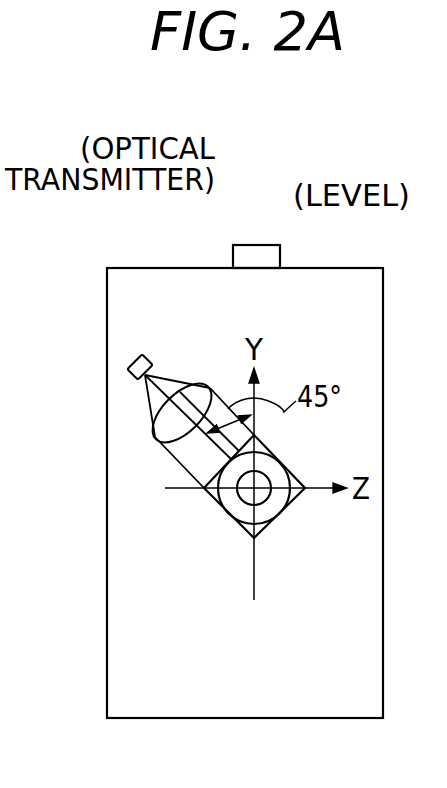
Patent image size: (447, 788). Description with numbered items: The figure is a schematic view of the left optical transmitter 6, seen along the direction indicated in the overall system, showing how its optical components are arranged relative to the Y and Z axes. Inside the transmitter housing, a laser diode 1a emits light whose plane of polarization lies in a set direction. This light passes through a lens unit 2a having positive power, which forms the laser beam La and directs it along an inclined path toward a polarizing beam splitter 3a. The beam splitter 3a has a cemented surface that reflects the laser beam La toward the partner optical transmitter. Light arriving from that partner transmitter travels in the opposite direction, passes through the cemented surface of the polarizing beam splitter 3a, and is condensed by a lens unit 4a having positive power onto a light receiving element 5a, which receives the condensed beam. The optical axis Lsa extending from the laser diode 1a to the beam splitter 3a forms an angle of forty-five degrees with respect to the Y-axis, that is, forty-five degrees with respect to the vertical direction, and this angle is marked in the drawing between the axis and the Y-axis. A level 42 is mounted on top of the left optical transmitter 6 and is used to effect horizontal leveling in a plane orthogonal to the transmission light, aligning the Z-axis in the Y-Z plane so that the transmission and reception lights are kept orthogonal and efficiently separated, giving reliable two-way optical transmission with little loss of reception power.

The laser diode 1a is at (148, 353).
The lens unit having positive power 2a is at (210, 386).
The polarizing beam splitter 3a is at (292, 502).
The lens unit having positive power 4a is at (243, 527).
The light receiving element 5a is at (268, 497).
The left optical transmitter 6 is at (163, 268).
The level 42 is at (275, 245).
The laser beam La is at (177, 454).
The optical axis Lsa is at (212, 455).